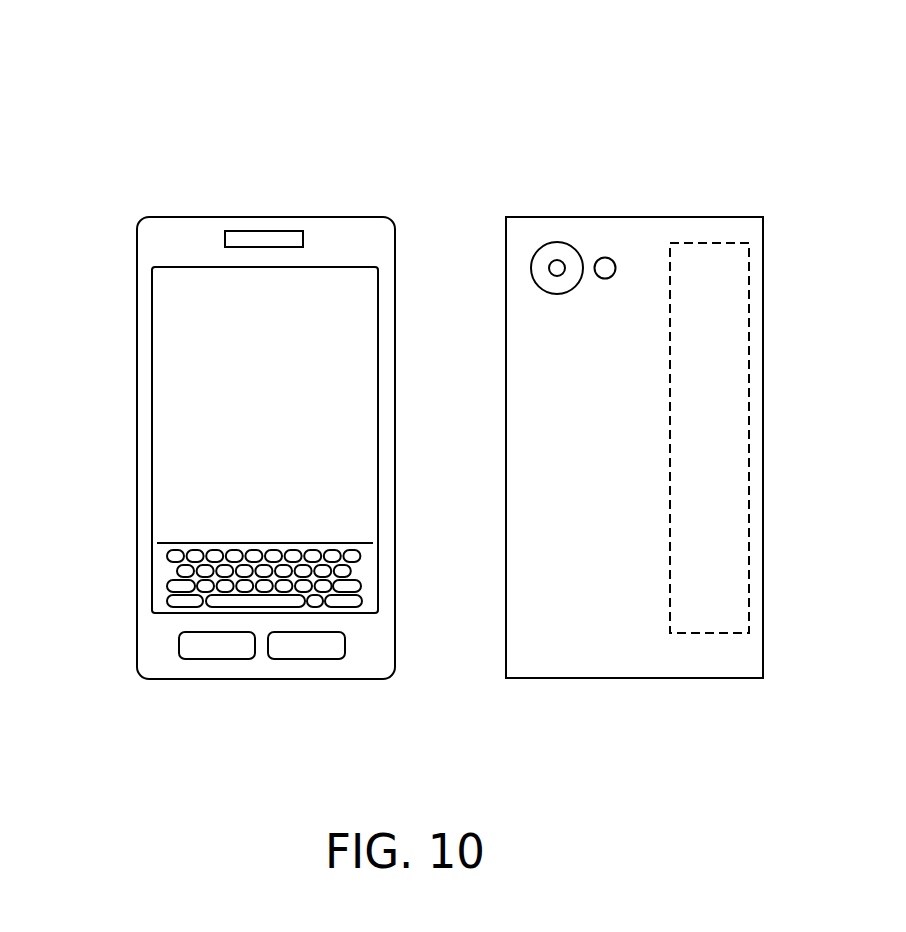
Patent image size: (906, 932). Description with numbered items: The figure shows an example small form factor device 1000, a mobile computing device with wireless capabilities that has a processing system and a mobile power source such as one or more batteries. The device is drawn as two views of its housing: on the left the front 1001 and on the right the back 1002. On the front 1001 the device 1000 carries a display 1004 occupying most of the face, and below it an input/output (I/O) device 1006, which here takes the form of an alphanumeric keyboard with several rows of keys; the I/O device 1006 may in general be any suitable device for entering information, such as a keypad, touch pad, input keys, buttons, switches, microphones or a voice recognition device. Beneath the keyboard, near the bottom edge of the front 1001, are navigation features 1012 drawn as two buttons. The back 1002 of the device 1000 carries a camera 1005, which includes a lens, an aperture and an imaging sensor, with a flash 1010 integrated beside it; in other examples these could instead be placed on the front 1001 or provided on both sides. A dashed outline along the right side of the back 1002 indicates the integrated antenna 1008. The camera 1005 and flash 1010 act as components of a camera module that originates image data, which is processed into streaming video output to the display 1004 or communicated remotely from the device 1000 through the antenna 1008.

The small form factor device 1000 is at (92, 78).
The front 1001 is at (242, 208).
The back 1002 is at (558, 208).
The display 1004 is at (287, 453).
The camera 1005 is at (533, 258).
The input/output (I/O) device 1006 is at (160, 575).
The integrated antenna 1008 is at (731, 451).
The flash 1010 is at (616, 266).
The navigation features 1012 is at (197, 648).